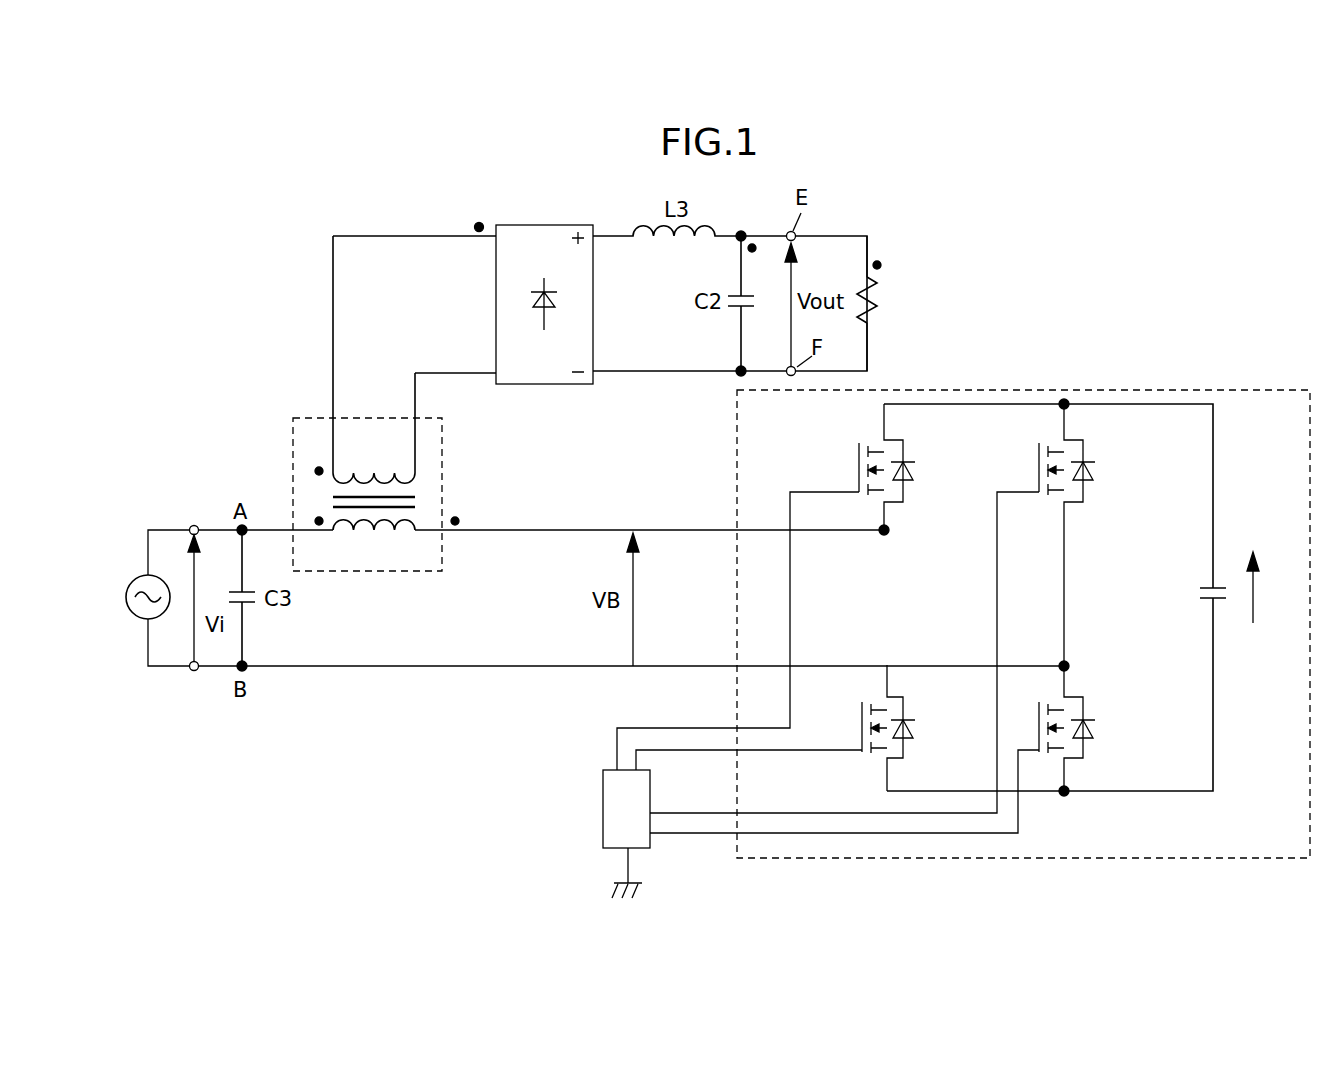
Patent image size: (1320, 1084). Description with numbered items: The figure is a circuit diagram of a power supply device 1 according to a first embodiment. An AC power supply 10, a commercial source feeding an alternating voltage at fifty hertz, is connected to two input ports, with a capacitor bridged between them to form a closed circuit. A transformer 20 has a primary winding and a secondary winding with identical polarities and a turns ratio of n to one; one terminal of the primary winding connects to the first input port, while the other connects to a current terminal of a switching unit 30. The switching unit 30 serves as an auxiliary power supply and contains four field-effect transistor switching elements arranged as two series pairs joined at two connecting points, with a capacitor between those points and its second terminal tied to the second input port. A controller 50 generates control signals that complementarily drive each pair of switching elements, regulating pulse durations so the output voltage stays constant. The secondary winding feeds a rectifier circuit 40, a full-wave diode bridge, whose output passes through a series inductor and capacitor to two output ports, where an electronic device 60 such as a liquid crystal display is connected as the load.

The power supply device 1 is at (1180, 225).
The AC power supply 10 is at (132, 581).
The transformer 20 is at (292, 433).
The switching unit 30 is at (1210, 389).
The rectifier circuit 40 is at (557, 226).
The controller 50 is at (603, 790).
The electronic device 60 is at (880, 293).